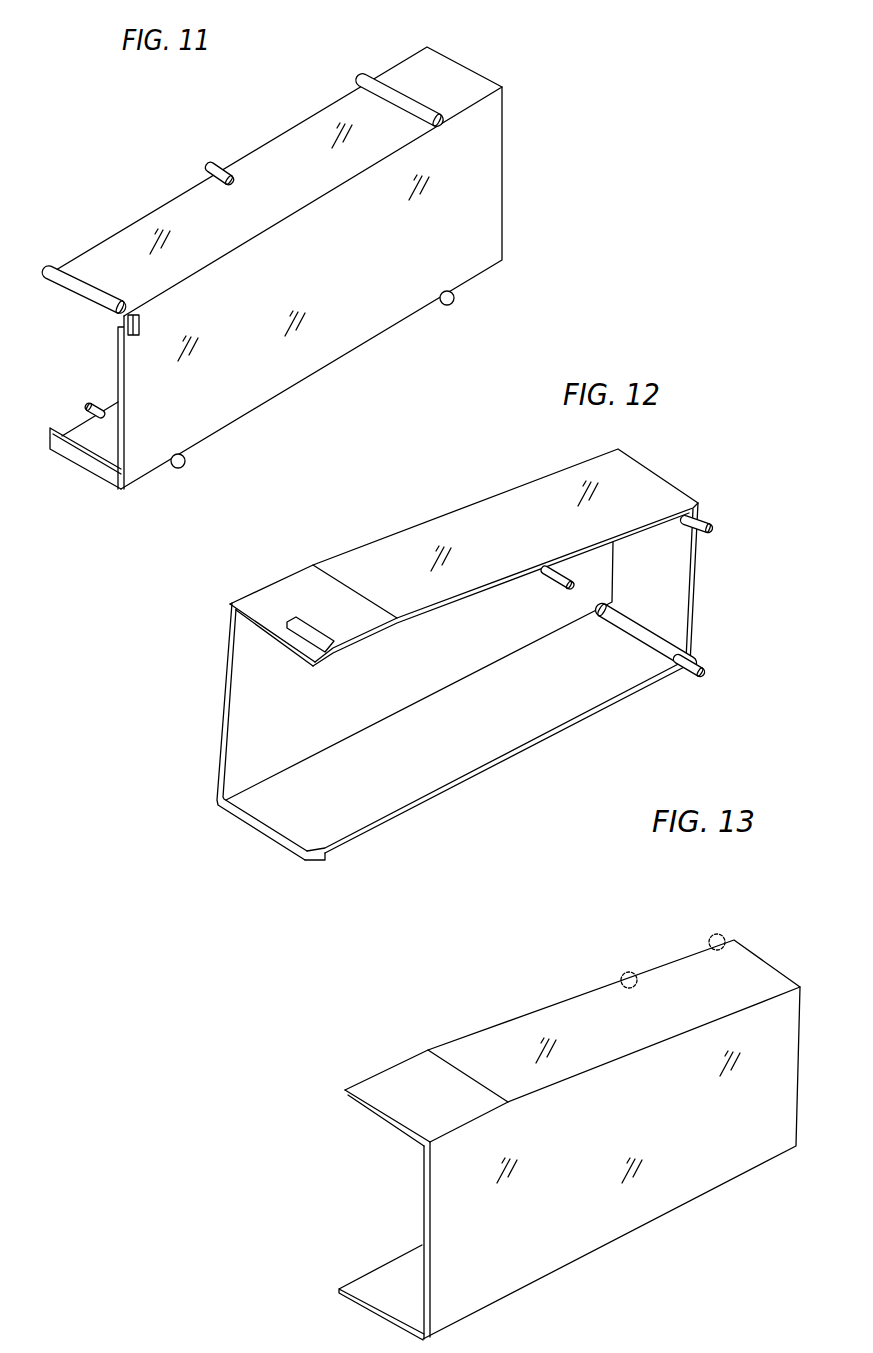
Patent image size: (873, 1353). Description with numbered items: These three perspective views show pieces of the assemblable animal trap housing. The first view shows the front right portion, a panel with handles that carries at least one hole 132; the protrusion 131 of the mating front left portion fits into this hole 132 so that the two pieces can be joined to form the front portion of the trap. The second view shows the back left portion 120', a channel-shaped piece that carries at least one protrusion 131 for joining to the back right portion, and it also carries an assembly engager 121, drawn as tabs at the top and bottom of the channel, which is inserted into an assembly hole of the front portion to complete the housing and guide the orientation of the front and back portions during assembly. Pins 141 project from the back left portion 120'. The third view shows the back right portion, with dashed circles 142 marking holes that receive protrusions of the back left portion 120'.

In FIG. 11, the hole 132 is at (214, 163).
In FIG. 11, the protrusion 131 is at (84, 407).
In FIG. 12, the back left portion 120' is at (457, 644).
In FIG. 12, the assembly engager 121 is at (302, 638).
In FIG. 12, the pin 141 is at (712, 526).
In FIG. 13, the hole 142 is at (710, 938).